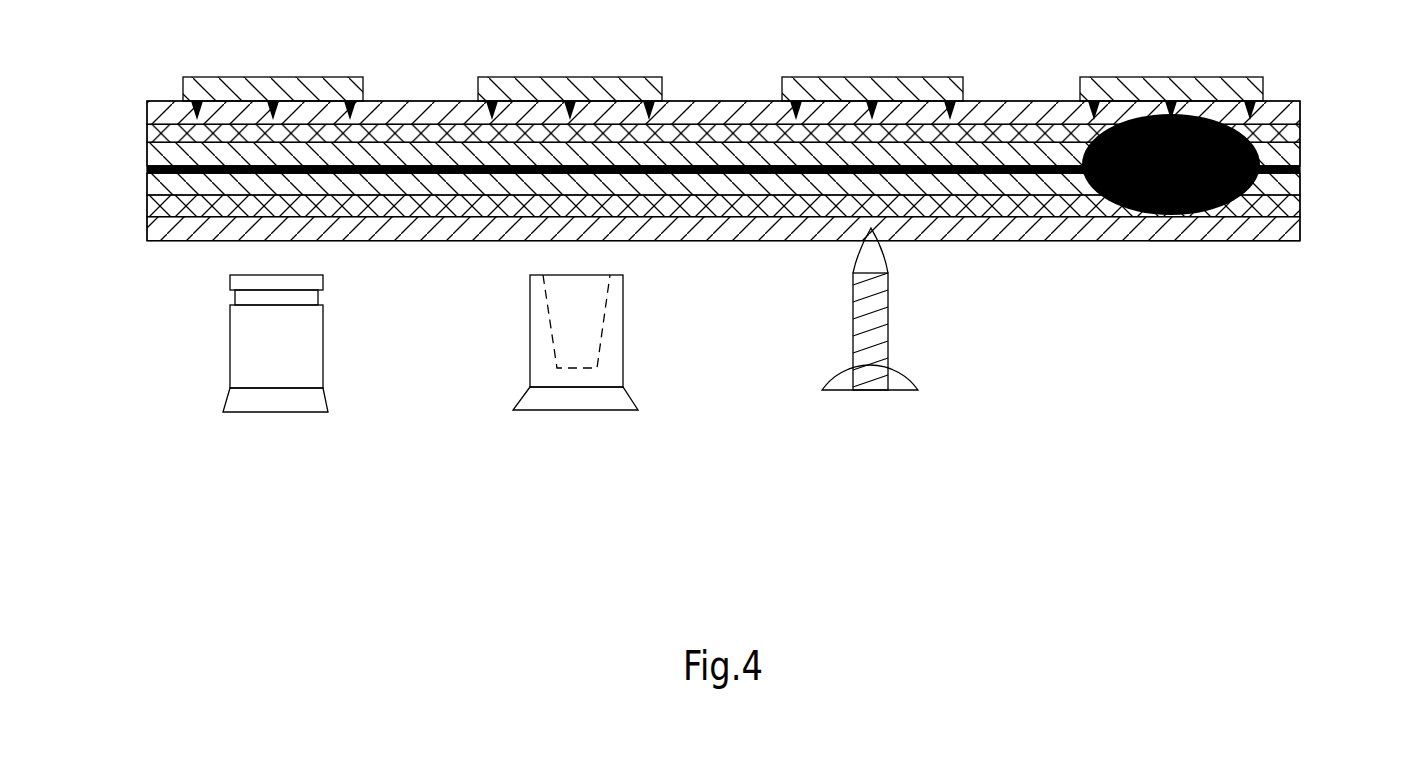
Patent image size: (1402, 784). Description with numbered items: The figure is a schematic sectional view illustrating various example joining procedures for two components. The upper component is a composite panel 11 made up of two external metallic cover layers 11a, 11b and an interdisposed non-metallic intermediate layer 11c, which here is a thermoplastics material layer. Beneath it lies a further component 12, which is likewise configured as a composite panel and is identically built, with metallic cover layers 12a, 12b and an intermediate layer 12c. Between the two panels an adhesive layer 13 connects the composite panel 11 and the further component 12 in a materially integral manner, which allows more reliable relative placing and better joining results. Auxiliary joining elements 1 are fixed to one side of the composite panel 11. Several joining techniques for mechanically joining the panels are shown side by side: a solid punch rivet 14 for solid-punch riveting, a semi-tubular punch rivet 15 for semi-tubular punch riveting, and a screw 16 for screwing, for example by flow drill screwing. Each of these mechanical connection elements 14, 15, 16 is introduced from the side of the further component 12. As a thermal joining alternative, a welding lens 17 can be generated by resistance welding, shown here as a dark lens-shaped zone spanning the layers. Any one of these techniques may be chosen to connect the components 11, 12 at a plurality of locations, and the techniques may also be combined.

The electronic component (chip) 1 is at (1213, 82).
The composite panel 11 is at (719, 96).
The metallic cover layer 11a is at (1283, 112).
The metallic cover layer 11b is at (1283, 157).
The non-metallic intermediate layer 11c is at (1280, 130).
The further component 12 is at (716, 245).
The metallic cover layer 12a is at (1300, 241).
The metallic cover layer 12b is at (1277, 182).
The intermediate layer 12c is at (1287, 207).
The adhesive layer 13 is at (147, 168).
The solid punch rivet 14 is at (167, 437).
The semi-tubular punch rivet 15 is at (482, 437).
The screw 16 is at (807, 437).
The welding lens 17 is at (1212, 230).